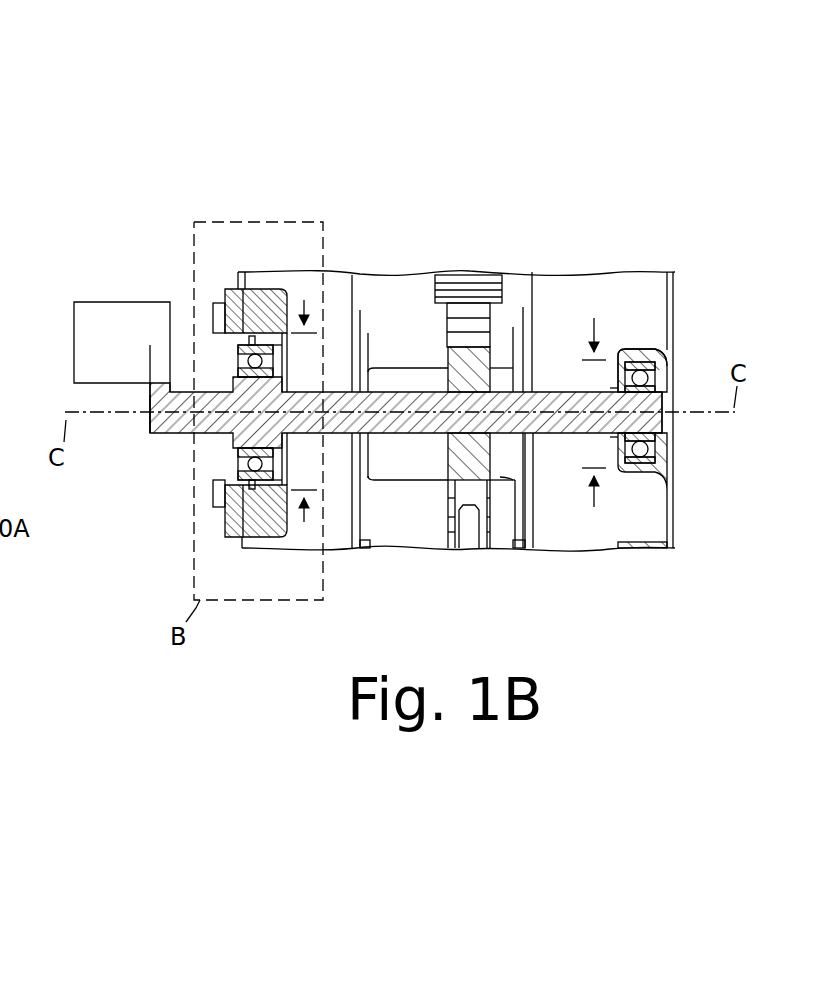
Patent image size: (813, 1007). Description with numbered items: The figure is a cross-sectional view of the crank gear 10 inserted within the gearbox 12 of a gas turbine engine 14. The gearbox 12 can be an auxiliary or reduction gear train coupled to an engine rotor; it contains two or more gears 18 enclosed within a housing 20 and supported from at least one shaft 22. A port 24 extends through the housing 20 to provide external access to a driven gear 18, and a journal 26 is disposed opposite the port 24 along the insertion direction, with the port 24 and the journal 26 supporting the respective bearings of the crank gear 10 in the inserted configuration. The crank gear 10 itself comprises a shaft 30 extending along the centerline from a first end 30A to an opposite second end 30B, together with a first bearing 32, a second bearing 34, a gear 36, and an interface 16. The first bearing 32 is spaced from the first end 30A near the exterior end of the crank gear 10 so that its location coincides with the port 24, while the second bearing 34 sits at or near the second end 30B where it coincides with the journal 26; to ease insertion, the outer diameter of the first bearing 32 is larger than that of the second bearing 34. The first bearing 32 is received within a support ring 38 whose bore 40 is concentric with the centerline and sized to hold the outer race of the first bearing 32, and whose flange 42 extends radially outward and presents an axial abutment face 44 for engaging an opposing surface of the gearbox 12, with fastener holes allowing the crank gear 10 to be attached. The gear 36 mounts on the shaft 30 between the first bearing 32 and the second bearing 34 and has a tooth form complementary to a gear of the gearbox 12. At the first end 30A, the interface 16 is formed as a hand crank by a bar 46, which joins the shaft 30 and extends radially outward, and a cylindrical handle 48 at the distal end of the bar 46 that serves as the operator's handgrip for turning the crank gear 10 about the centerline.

The crank gear 10 is at (101, 112).
The gearbox 12 is at (483, 362).
The gas turbine engine 14 is at (566, 242).
The interface 16 is at (68, 282).
The gears 18 is at (430, 288).
The housing 20 is at (295, 270).
The shaft 22 is at (418, 482).
The port 24 is at (307, 399).
The journal 26 is at (595, 400).
The shaft 30 is at (417, 416).
The first end 30A is at (150, 430).
The second end 30B is at (668, 421).
The first bearing 32 is at (238, 470).
The second bearing 34 is at (657, 437).
The gear 36 is at (490, 365).
The support ring 38 is at (215, 276).
The bore 40 is at (234, 353).
The flange 42 is at (220, 297).
The axial abutment face 44 is at (249, 308).
The bar 46 is at (170, 363).
The handle 48 is at (74, 342).